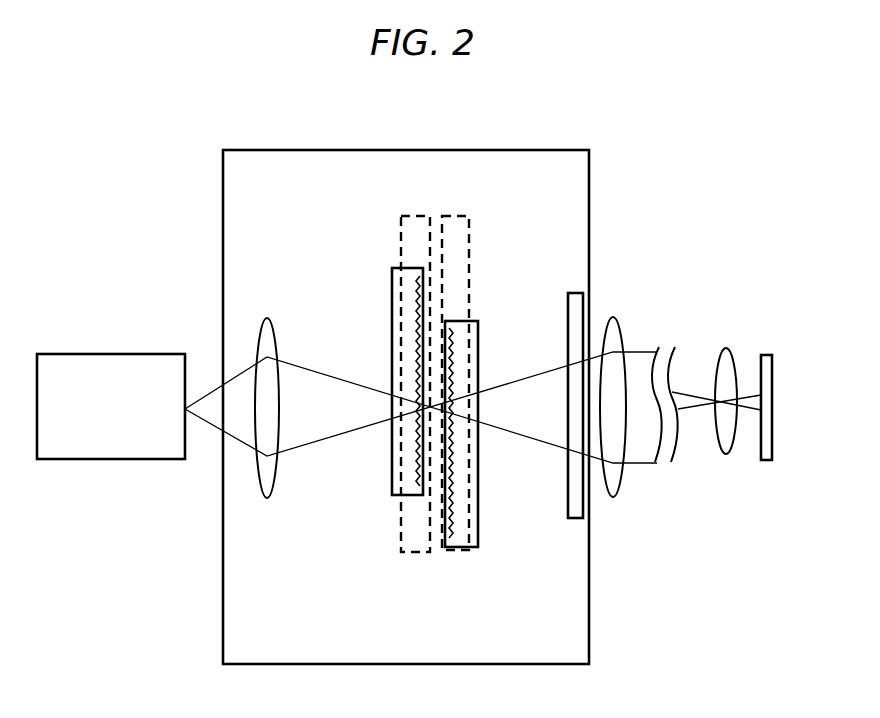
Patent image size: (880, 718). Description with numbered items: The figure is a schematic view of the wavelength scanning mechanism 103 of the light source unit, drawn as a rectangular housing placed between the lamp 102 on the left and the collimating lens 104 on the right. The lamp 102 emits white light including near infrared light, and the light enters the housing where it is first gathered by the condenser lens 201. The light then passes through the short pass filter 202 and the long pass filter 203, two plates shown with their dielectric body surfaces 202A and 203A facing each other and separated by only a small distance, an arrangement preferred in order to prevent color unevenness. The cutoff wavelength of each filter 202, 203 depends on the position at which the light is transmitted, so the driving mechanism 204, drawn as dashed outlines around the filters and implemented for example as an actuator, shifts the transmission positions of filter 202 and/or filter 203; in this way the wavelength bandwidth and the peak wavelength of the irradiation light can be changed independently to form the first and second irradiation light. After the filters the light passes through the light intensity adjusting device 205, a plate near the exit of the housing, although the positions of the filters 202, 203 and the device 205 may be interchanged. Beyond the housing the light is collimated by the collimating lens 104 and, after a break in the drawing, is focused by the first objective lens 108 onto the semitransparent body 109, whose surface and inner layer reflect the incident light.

The lamp 102 is at (112, 459).
The wavelength scanning mechanism 103 is at (233, 149).
The collimating lens 104 is at (613, 497).
The first objective lens 108 is at (726, 455).
The semitransparent body 109 is at (766, 460).
The condenser lens 201 is at (273, 487).
The short pass filter 202 is at (392, 477).
The dielectric body surface 202A is at (420, 292).
The long pass filter 203 is at (462, 547).
The dielectric body surface 203A is at (445, 353).
The driving mechanism 204 is at (452, 215).
The light intensity adjusting device 205 is at (568, 518).